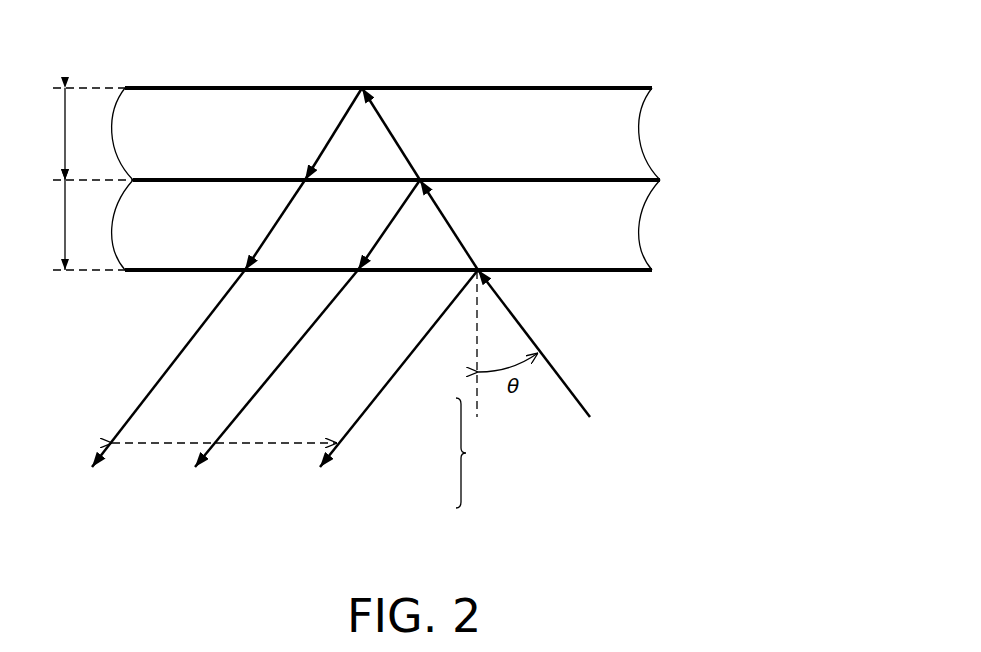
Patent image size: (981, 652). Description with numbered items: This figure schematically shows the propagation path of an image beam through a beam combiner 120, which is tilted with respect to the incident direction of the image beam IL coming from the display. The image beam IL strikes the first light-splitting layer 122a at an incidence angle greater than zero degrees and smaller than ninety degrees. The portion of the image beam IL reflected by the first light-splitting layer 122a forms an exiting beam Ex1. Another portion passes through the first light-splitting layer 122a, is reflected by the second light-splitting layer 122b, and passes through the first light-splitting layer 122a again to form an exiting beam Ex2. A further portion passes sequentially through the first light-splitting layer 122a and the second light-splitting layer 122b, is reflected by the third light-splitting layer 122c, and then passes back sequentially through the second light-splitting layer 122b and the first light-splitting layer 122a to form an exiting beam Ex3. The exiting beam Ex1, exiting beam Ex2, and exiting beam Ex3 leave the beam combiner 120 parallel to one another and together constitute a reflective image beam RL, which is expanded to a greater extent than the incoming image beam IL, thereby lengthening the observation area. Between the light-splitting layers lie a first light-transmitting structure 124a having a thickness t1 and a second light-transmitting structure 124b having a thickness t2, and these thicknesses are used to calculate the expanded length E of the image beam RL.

The beam combiner 120 is at (176, 50).
The first light-splitting layer 122a is at (580, 274).
The second light-splitting layer 122b is at (580, 184).
The third light-splitting layer 122c is at (580, 92).
The first light-transmitting structure 124a is at (628, 240).
The second light-transmitting structure 124b is at (628, 148).
The image beam IL is at (573, 388).
The image beam (reflective beam) RL is at (475, 453).
The exiting beam Ex1 is at (387, 380).
The exiting beam Ex2 is at (304, 338).
The exiting beam Ex3 is at (212, 313).
The expanded length E is at (262, 446).
The thickness t1 is at (81, 225).
The thickness t2 is at (78, 134).